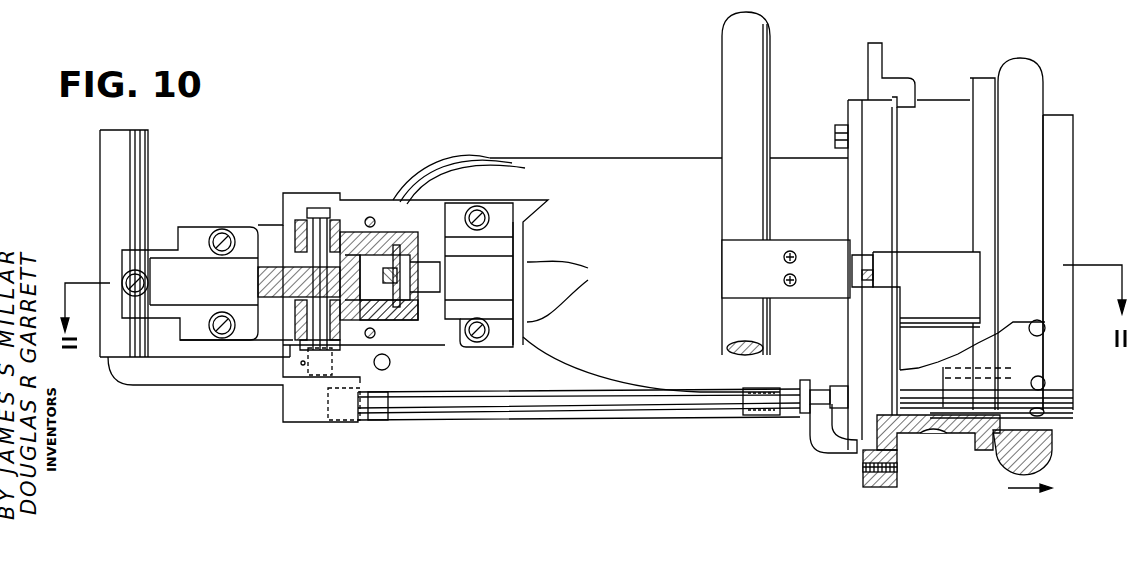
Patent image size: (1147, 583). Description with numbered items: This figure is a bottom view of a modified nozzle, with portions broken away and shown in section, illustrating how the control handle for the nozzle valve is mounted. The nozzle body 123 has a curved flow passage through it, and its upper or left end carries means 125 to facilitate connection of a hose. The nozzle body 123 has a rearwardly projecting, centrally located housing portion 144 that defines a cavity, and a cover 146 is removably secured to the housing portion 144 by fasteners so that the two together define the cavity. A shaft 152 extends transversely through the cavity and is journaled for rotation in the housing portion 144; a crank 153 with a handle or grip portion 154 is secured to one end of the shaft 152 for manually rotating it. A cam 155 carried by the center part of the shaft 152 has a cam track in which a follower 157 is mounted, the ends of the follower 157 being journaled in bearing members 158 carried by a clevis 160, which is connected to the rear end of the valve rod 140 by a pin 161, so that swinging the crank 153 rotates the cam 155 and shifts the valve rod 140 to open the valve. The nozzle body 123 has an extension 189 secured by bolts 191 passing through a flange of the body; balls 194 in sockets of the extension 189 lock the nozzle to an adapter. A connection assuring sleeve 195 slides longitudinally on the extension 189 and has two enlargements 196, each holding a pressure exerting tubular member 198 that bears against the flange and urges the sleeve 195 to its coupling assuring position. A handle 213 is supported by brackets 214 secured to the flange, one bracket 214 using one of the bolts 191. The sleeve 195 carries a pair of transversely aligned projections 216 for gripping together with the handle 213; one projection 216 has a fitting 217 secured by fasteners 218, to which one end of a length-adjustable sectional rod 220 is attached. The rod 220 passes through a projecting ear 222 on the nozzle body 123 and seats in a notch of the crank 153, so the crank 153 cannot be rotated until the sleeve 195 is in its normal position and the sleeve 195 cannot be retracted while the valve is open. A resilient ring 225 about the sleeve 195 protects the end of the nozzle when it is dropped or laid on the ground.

The nozzle body 123 is at (630, 170).
The hose connection means 125 is at (457, 150).
The valve rod 140 is at (433, 275).
The housing portion 144 is at (270, 222).
The cover 146 is at (193, 232).
The shaft 152 is at (318, 222).
The crank 153 is at (223, 385).
The handle or grip portion 154 is at (148, 173).
The cam 155 is at (268, 286).
The follower 157 is at (362, 280).
The bearing members 158 is at (370, 217).
The clevis 160 is at (425, 313).
The pin 161 is at (400, 250).
The extension 189 is at (864, 98).
The bolts 191 is at (835, 130).
The balls 194 is at (1060, 363).
The connection assuring sleeve 195 is at (949, 444).
The enlargements 196 is at (923, 270).
The pressure exerting tubular member 198 is at (865, 262).
The handle 213 is at (747, 35).
The brackets 214 is at (815, 257).
The projections 216 is at (882, 53).
The fitting 217 is at (822, 437).
The fasteners 218 is at (893, 465).
The sectional rod 220 is at (668, 402).
The projecting ear 222 is at (378, 421).
The resilient ring 225 is at (1012, 70).